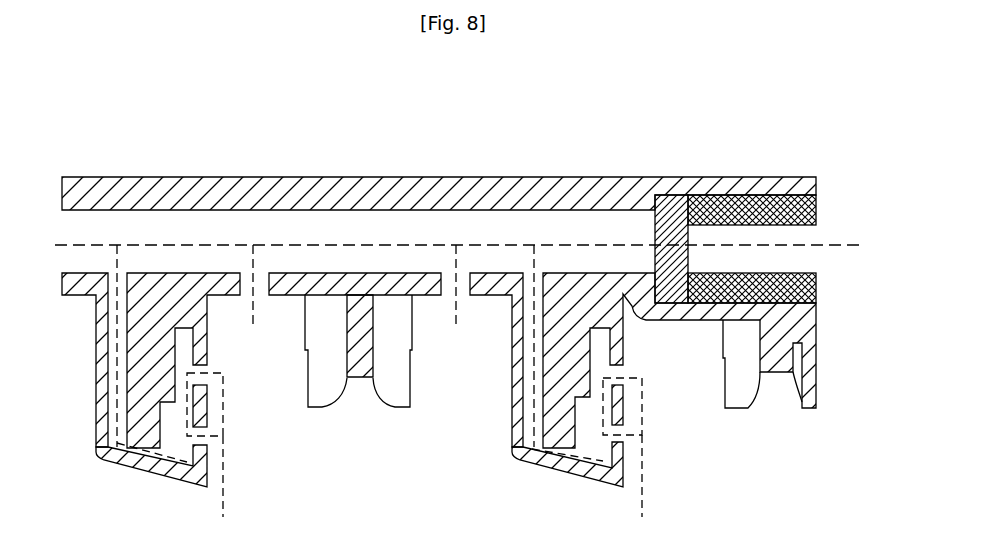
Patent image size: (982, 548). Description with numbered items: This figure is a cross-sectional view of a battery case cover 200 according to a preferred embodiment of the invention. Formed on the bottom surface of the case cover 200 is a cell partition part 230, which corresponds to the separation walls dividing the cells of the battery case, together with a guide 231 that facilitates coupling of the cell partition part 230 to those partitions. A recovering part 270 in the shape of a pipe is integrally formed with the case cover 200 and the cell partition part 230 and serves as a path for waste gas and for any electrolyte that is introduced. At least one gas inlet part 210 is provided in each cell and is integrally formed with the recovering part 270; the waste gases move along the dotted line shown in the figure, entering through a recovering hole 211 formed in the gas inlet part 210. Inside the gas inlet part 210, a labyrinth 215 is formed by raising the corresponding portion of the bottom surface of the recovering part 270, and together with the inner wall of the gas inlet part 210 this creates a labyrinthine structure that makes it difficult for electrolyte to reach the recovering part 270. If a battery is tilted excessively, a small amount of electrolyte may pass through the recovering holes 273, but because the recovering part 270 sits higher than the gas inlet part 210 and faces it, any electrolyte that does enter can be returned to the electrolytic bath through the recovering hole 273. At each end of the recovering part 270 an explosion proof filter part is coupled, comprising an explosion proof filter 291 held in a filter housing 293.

The battery case cover 200 is at (440, 152).
The gas inlet part 210 is at (514, 422).
The recovering hole 211 is at (642, 378).
The labyrinth 215 is at (577, 445).
The cell partition part 230 is at (357, 378).
The guide 231 is at (393, 357).
The recovering part 270 is at (75, 227).
The recovering hole 273 is at (260, 290).
The explosion proof filter 291 is at (688, 193).
The filter housing 293 is at (746, 193).